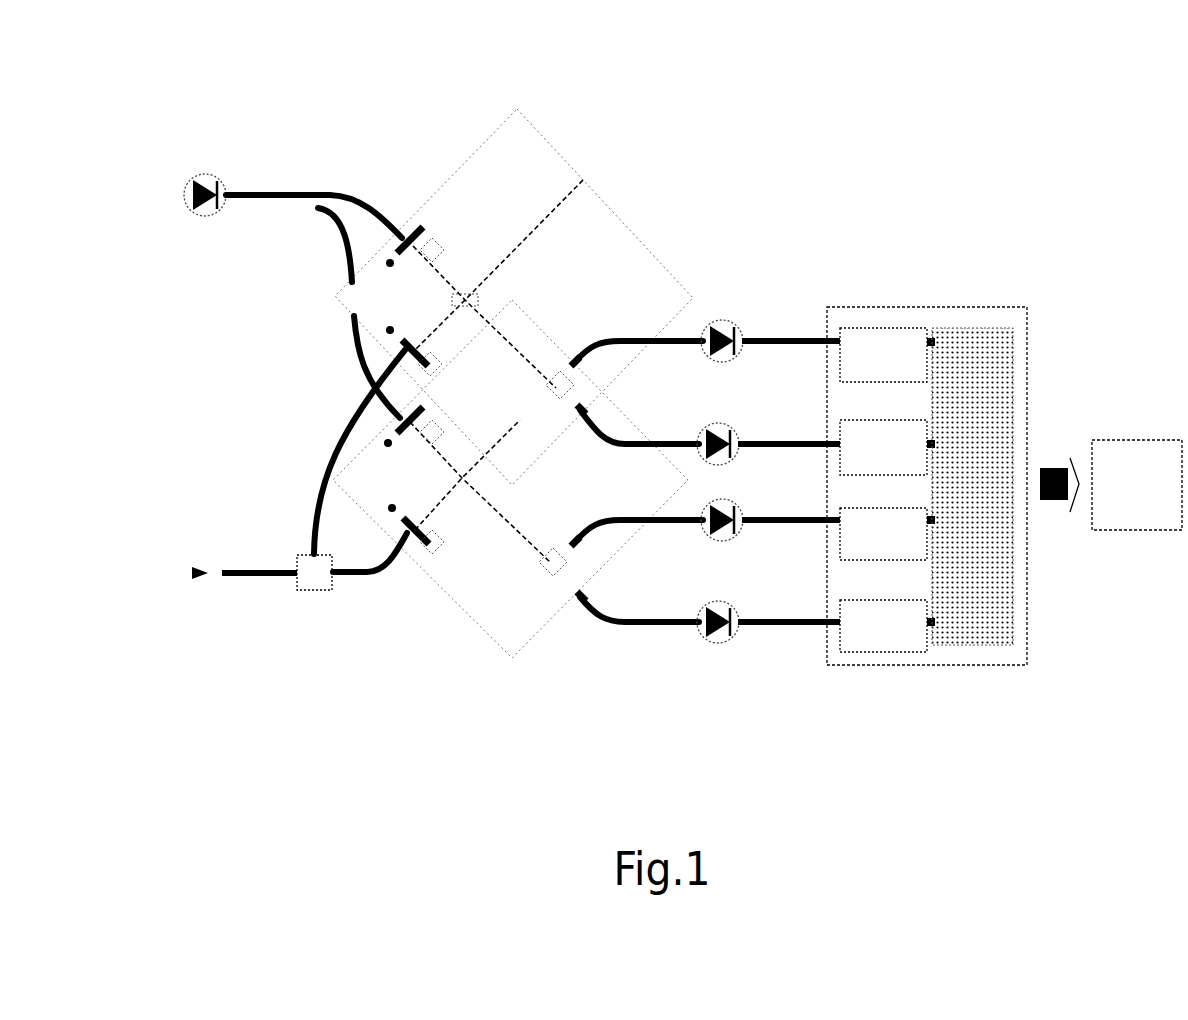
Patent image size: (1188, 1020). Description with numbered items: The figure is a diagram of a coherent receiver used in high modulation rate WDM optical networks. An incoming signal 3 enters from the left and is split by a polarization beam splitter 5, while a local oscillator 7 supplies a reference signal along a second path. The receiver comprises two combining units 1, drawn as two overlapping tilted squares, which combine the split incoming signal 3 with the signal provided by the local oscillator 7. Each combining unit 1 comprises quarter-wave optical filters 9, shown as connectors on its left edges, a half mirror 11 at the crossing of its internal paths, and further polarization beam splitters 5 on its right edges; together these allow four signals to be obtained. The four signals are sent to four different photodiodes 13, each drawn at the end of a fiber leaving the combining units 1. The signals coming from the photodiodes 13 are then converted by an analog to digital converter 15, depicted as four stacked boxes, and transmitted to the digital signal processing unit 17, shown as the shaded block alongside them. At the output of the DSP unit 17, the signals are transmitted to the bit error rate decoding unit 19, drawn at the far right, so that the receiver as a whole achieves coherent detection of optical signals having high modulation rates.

The combining unit 1 is at (596, 233).
The incoming signal 3 is at (188, 575).
The polarization beam splitter 5 is at (553, 385).
The local oscillator 7 is at (192, 178).
The λ/4 optical filter 9 is at (408, 228).
The half mirror 11 is at (464, 297).
The photodiode 13 is at (713, 423).
The analog to digital converter 15 is at (836, 490).
The digital signal processing unit 17 is at (927, 486).
The bit error rate decoding unit 19 is at (1111, 485).